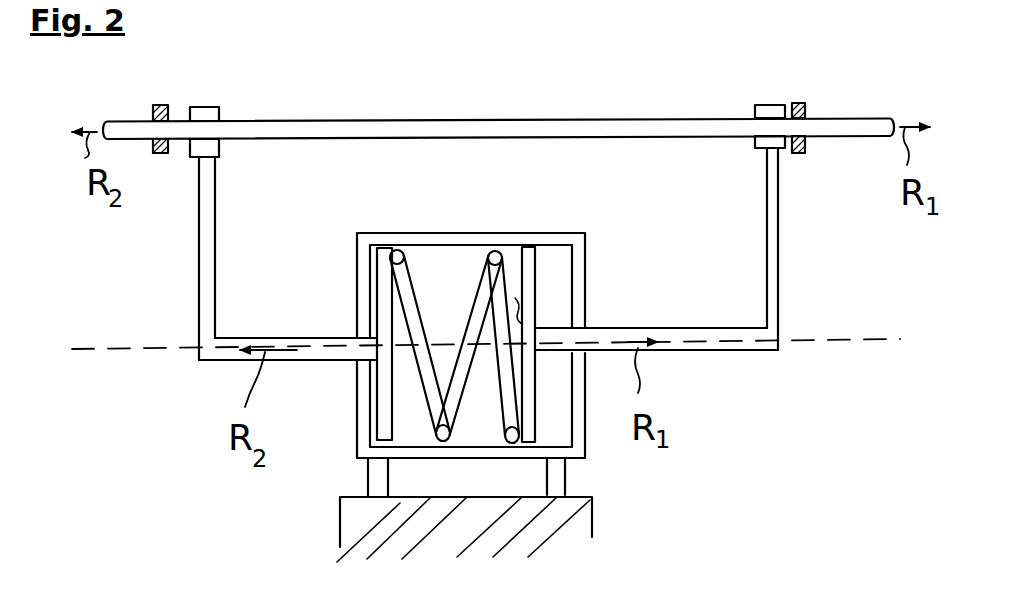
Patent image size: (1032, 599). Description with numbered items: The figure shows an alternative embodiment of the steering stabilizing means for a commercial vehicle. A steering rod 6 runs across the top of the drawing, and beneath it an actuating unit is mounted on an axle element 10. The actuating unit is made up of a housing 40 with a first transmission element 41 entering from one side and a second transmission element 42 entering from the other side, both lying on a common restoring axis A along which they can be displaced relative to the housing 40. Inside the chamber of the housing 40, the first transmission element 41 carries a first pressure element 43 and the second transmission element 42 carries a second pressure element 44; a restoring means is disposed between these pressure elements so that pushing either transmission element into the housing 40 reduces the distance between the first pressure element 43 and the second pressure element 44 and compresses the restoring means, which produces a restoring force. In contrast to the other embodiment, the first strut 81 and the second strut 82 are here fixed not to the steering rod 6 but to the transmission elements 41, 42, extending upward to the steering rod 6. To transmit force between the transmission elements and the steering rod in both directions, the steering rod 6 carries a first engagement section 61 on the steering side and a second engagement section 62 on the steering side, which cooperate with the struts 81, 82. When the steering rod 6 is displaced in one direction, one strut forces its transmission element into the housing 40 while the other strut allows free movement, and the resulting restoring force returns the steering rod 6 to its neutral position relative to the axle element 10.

The steering rod 6 is at (488, 132).
The axle element 10 is at (585, 527).
The housing 40 is at (587, 443).
The first transmission element 41 is at (688, 343).
The second transmission element 42 is at (312, 340).
The first pressure element 43 is at (533, 263).
The second pressure element 44 is at (381, 256).
The first engagement section on the steering side 61 is at (808, 105).
The second engagement section on the steering side 62 is at (150, 108).
The first strut 81 is at (778, 245).
The second strut 82 is at (205, 240).
The restoring axis A is at (802, 342).